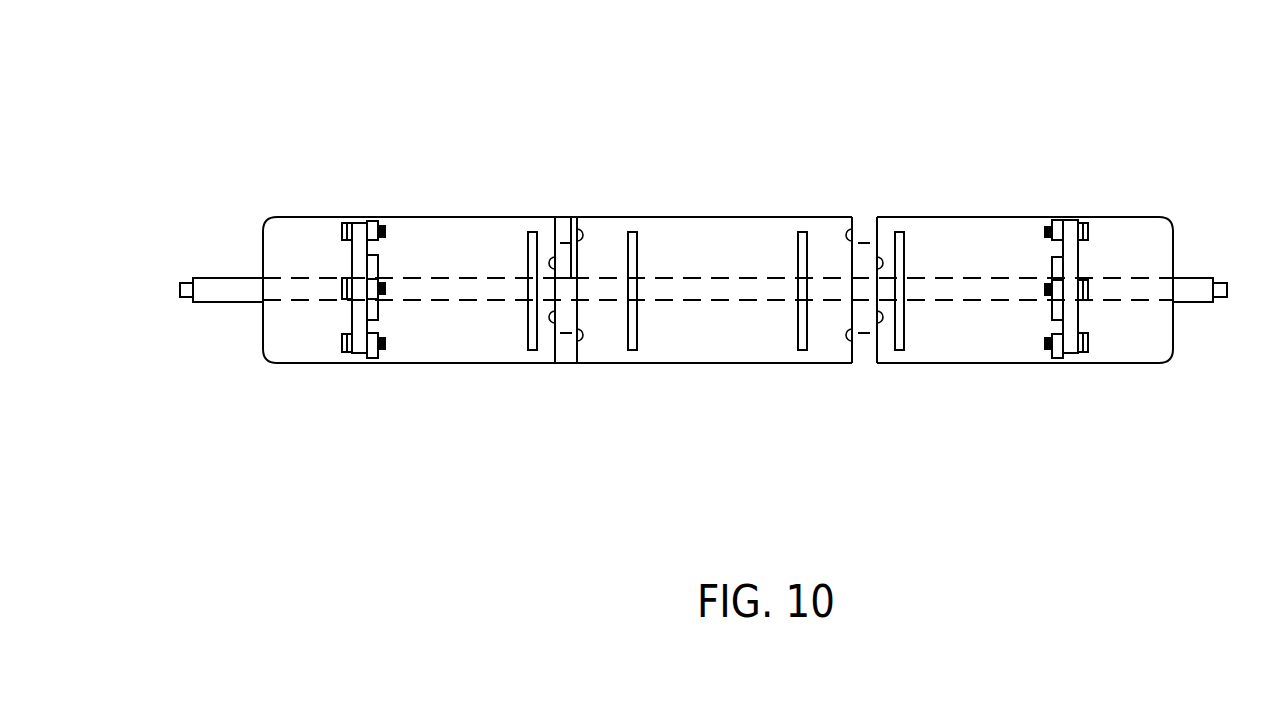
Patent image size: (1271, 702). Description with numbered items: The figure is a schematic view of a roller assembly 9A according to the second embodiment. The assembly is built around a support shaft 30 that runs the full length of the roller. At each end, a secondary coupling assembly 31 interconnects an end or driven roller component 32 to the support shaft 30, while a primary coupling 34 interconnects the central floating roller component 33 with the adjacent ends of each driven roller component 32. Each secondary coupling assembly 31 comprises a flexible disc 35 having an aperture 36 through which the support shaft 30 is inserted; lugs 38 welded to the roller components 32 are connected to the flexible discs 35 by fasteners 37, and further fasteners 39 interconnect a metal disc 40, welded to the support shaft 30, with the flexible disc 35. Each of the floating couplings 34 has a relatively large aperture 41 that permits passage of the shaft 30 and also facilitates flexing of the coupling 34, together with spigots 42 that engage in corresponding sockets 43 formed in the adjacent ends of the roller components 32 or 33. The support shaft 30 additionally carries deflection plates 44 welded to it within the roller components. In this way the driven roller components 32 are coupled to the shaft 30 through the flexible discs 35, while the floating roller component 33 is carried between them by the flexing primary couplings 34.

The roller assembly 9A is at (722, 177).
The support shaft 30 is at (237, 288).
The secondary coupling assembly 31 is at (357, 212).
The driven roller component 32 is at (458, 217).
The floating roller component 33 is at (747, 217).
The primary coupling 34 is at (566, 350).
The flexible disc 35 is at (360, 314).
The aperture 36 is at (352, 283).
The fastener 37 is at (383, 342).
The lug 38 is at (376, 225).
The further fastener 39 is at (1047, 290).
The metal disc 40 is at (380, 313).
The aperture 41 is at (864, 243).
The spigot 42 is at (583, 337).
The socket 43 is at (585, 236).
The deflection plate 44 is at (635, 260).